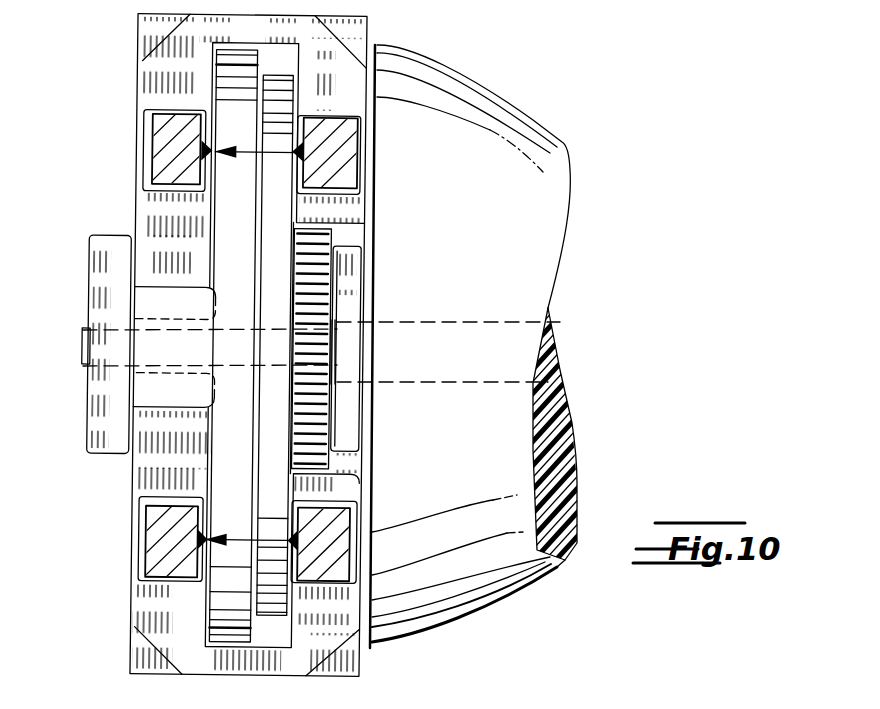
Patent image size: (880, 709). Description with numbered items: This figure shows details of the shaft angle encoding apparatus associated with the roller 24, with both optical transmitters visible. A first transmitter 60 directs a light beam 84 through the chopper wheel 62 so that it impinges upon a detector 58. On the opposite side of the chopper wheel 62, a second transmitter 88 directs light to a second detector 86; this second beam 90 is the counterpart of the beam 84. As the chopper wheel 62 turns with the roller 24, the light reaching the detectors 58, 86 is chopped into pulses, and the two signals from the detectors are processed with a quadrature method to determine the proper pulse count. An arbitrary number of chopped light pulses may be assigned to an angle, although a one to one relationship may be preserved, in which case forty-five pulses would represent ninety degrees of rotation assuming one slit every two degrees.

The roller 24 is at (525, 138).
The detector 58 is at (153, 557).
The first transmitter 60 is at (343, 530).
The chopper wheel 62 is at (273, 308).
The light beam 84 is at (232, 541).
The detector 86 is at (158, 147).
The transmitter 88 is at (343, 158).
The second beam 90 is at (236, 153).